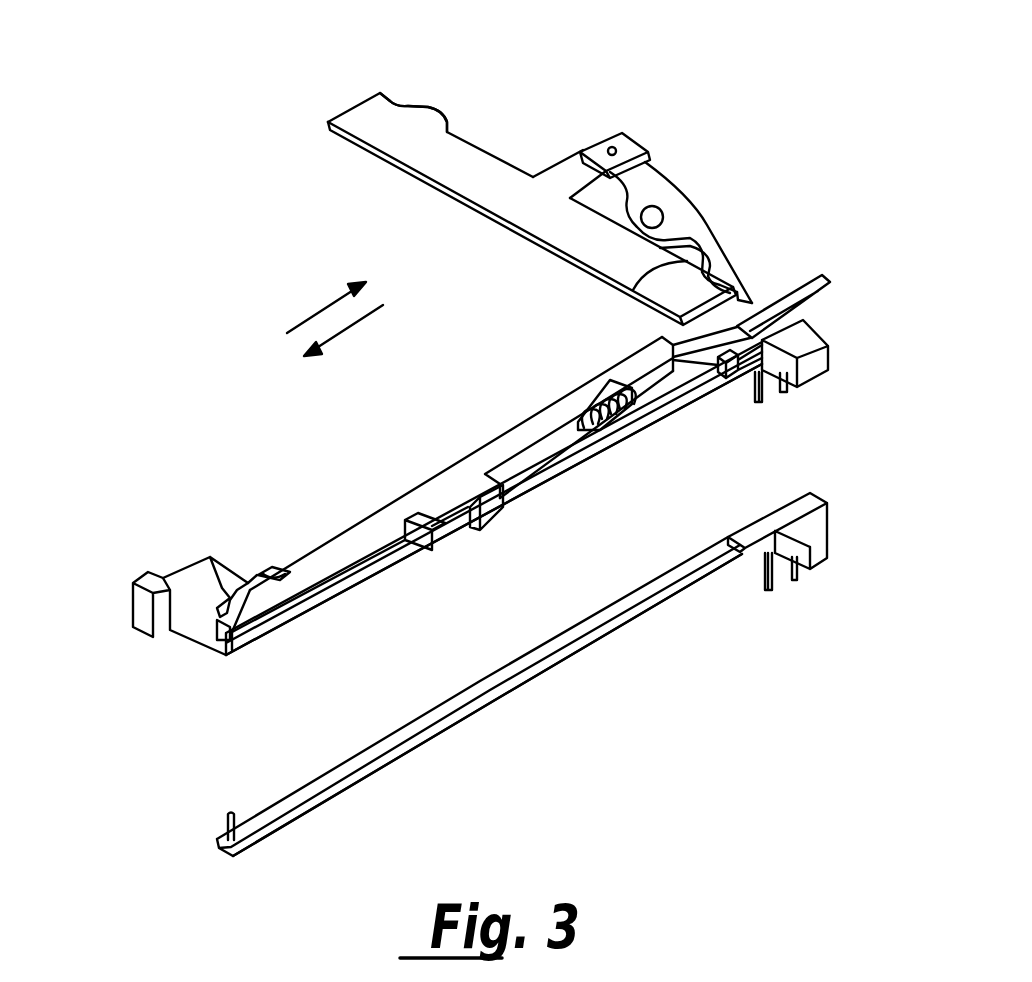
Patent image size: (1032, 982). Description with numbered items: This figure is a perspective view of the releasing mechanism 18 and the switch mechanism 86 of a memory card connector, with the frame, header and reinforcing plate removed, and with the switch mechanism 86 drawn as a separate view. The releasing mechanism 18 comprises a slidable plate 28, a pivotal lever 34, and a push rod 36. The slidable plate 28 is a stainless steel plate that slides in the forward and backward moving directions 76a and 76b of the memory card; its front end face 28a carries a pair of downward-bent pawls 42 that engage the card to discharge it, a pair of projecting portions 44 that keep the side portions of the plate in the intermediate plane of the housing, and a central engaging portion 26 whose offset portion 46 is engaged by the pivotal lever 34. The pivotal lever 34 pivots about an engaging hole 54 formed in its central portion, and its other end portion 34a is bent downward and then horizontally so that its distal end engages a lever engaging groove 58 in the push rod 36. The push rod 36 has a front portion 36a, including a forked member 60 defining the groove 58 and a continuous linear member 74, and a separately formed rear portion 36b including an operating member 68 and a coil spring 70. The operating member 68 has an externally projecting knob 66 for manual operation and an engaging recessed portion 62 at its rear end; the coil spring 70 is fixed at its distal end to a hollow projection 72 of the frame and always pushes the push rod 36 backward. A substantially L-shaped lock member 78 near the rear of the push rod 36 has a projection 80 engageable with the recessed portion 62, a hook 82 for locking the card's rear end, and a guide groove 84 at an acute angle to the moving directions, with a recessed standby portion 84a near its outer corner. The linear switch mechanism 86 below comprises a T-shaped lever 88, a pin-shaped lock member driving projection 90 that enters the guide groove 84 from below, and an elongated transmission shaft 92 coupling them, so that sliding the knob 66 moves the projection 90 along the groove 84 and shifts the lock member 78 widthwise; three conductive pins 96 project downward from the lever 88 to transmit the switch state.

The releasing mechanism 18 is at (487, 90).
The engaging portion 26 is at (567, 180).
The slidable plate 28 is at (472, 163).
The front end face 28a is at (515, 160).
The pivotal lever 34 is at (650, 183).
The other end portion 34a is at (757, 293).
The push rod 36 is at (467, 547).
The front portion 36a is at (757, 470).
The rear portion 36b is at (544, 360).
The pawls 42 is at (380, 92).
The projecting portions 44 is at (433, 112).
The offset portion 46 is at (615, 145).
The engaging hole 54 is at (663, 217).
The lever engaging groove 58 is at (827, 290).
The forked member 60 is at (747, 342).
The engaging recessed portion 62 is at (262, 567).
The knob 66 is at (490, 512).
The operating member 68 is at (443, 495).
The coil spring 70 is at (583, 402).
The hollow projection 72 is at (635, 420).
The linear member 74 is at (700, 385).
The forward moving direction 76a is at (320, 310).
The backward moving direction 76b is at (353, 327).
The lock member 78 is at (282, 607).
The projection 80 is at (293, 550).
The hook 82 is at (143, 585).
The guide groove 84 is at (230, 587).
The recessed standby portion 84a is at (198, 612).
The switch mechanism 86 is at (397, 573).
The lever 88 is at (820, 363).
The lock member driving projection 90 is at (237, 823).
The transmission shaft 92 is at (348, 593).
The conductive pins 96 is at (783, 392).